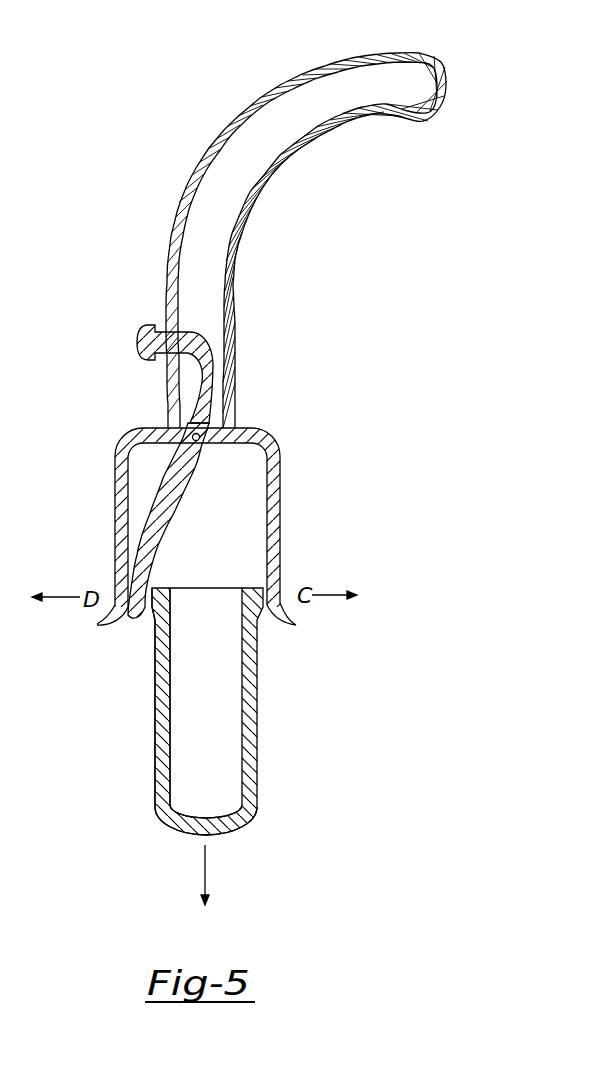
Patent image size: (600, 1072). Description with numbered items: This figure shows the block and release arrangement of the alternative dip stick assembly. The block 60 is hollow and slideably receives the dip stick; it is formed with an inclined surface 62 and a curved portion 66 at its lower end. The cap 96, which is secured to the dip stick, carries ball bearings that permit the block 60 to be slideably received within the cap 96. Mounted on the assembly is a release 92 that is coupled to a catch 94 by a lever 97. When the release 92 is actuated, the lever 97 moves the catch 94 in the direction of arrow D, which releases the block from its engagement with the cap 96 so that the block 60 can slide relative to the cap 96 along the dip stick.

The release 92 is at (137, 343).
The catch 94 is at (97, 626).
The cap 96 is at (281, 513).
The lever 97 is at (114, 517).
The block 60 is at (203, 746).
The inclined surface 62 is at (152, 718).
The curved portion 66 is at (232, 833).